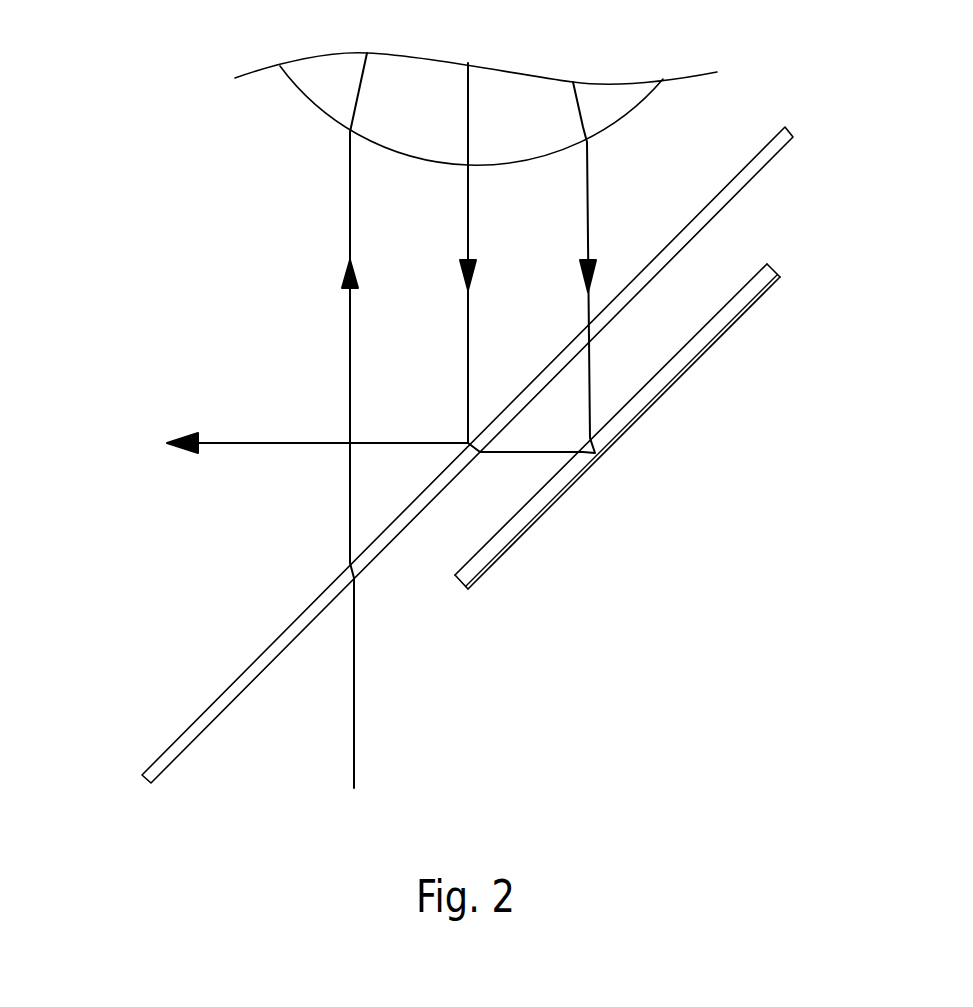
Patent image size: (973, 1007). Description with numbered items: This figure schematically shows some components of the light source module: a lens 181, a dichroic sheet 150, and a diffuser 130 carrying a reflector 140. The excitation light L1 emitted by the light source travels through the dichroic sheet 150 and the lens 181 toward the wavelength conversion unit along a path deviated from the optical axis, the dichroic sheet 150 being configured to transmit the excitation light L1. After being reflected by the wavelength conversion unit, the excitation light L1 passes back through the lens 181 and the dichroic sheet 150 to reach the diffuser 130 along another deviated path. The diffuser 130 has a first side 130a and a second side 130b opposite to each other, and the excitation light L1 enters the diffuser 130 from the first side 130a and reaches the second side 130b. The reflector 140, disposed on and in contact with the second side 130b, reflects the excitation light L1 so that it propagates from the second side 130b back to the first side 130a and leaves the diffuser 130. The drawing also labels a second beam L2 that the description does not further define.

The lens 181 is at (327, 90).
The dichroic sheet 150 is at (790, 132).
The diffuser 130 is at (694, 392).
The first side 130a is at (750, 277).
The second side 130b is at (677, 377).
The reflector 140 is at (765, 293).
The excitation light L1 is at (347, 225).
The second light beam L2 is at (466, 223).